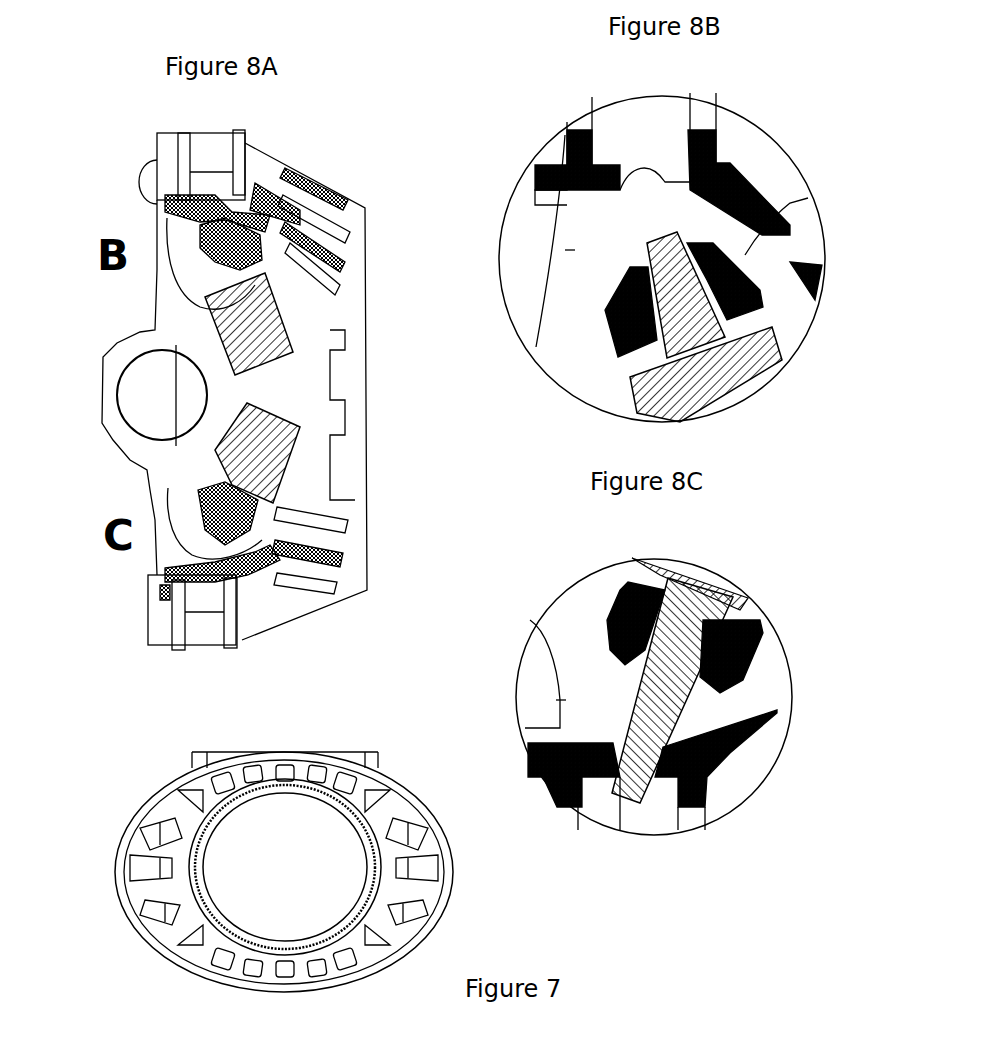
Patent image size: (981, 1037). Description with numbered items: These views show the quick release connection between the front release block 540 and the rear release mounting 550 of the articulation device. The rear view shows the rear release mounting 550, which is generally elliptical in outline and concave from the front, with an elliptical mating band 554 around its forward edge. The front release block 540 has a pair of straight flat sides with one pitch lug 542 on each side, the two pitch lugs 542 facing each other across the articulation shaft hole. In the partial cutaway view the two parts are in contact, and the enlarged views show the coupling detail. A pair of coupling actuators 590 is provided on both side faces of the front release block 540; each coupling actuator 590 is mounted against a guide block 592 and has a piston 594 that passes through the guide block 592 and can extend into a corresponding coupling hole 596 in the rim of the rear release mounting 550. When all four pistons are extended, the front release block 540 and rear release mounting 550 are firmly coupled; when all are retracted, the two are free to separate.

In FIG. 8A, the front release block 540 is at (170, 477).
In FIG. 8A, the pitch lug 542 is at (145, 375).
In FIG. 8A, the rear release mounting 550 is at (352, 362).
In FIG. 8B, the rear release mounting 550 is at (603, 236).
In FIG. 8C, the rear release mounting 550 is at (581, 669).
In FIG. 7, the rear release mounting 550 is at (417, 902).
In FIG. 8B, the elliptical mating band 554 is at (538, 167).
In FIG. 8A, the coupling actuator 590 is at (266, 340).
In FIG. 8B, the coupling actuator 590 is at (728, 385).
In FIG. 8A, the guide block 592 is at (200, 258).
In FIG. 8B, the guide block 592 is at (743, 252).
In FIG. 8C, the guide block 592 is at (613, 612).
In FIG. 8A, the piston 594 is at (200, 200).
In FIG. 8B, the piston 594 is at (605, 298).
In FIG. 8C, the piston 594 is at (630, 712).
In FIG. 8A, the coupling hole 596 is at (172, 578).
In FIG. 8B, the coupling hole 596 is at (635, 163).
In FIG. 8C, the coupling hole 596 is at (652, 758).